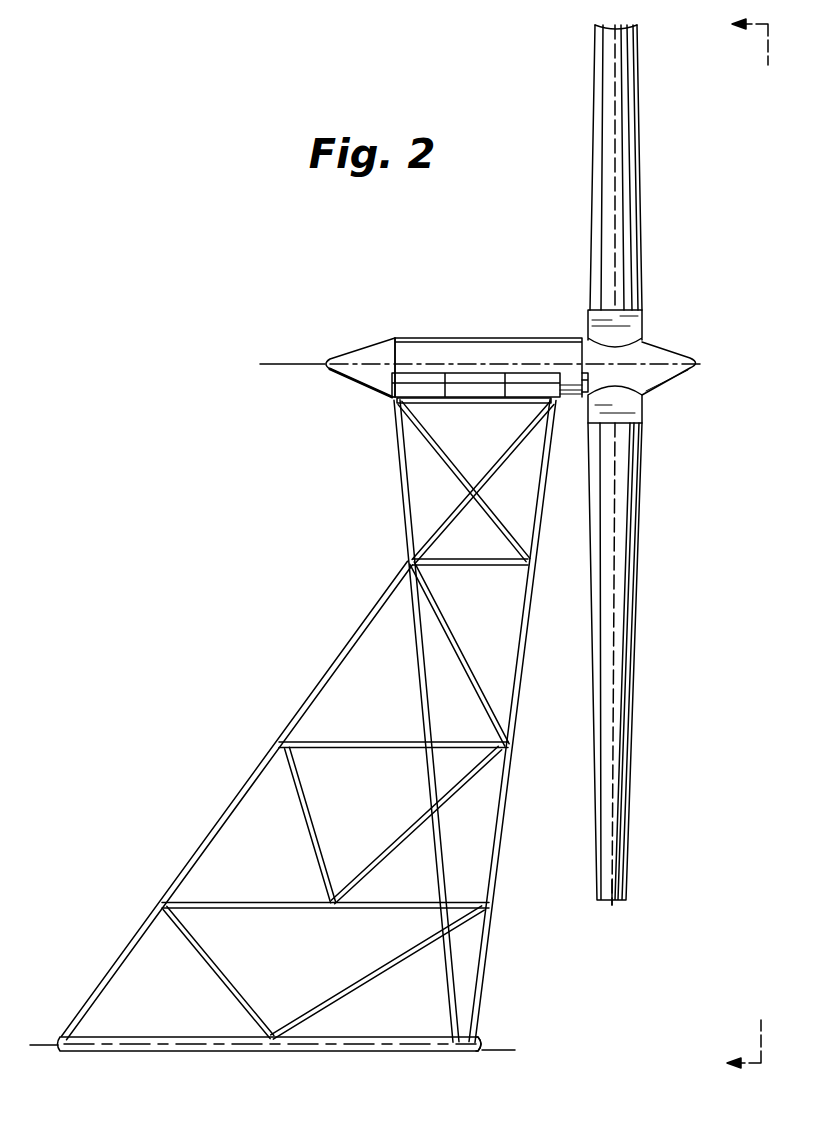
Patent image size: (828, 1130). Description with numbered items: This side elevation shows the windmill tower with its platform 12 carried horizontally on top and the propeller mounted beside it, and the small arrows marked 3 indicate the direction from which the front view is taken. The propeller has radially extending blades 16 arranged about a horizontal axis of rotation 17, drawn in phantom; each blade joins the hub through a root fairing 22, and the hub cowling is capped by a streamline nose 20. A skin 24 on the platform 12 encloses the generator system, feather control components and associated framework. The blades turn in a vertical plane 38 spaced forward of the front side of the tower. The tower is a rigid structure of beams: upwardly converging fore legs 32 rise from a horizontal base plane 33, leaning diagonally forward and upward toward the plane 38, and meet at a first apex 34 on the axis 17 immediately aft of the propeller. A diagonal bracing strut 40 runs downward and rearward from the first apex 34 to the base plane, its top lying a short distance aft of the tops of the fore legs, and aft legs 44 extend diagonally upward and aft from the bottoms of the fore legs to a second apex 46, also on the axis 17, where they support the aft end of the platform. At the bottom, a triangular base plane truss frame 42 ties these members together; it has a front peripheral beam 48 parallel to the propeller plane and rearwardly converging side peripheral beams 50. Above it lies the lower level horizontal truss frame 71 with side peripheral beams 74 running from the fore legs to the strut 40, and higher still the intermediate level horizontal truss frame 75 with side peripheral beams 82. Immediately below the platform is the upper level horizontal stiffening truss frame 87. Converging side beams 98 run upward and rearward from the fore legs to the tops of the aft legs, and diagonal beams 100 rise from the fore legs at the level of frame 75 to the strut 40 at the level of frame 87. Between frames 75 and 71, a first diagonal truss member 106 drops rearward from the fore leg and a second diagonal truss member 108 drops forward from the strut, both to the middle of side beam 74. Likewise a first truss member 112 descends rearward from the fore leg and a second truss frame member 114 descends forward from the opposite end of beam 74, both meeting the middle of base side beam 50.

The section line for FIG. 3 is at (742, 558).
The platform 12 is at (397, 402).
The blades 16 is at (622, 143).
The horizontal axis of rotation 17 is at (305, 362).
The streamline nose 20 is at (667, 353).
The root fairing 22 is at (638, 322).
The skin 24 is at (425, 340).
The fore legs 32 is at (517, 712).
The horizontal base plane 33 is at (505, 1057).
The first apex 34 is at (557, 362).
The vertical plane 38 is at (615, 905).
The diagonal bracing strut 40 is at (345, 648).
The base plane truss frame 42 is at (270, 1039).
The aft legs 44 is at (412, 684).
The second apex 46 is at (391, 338).
The front peripheral beam 48 is at (484, 1044).
The side peripheral beams 50 is at (380, 1051).
The lower level horizontal truss frame 71 is at (325, 898).
The side peripheral beams 74 is at (290, 910).
The intermediate level horizontal truss frame 75 is at (381, 739).
The side peripheral beams 82 is at (373, 748).
The upper level horizontal stiffening truss frame 87 is at (449, 546).
The converging side beams 98 is at (498, 518).
The diagonal beams 100 is at (467, 640).
The first diagonal truss member 106 is at (388, 858).
The second diagonal truss member 108 is at (313, 826).
The first truss member 112 is at (362, 980).
The second truss frame member 114 is at (222, 972).